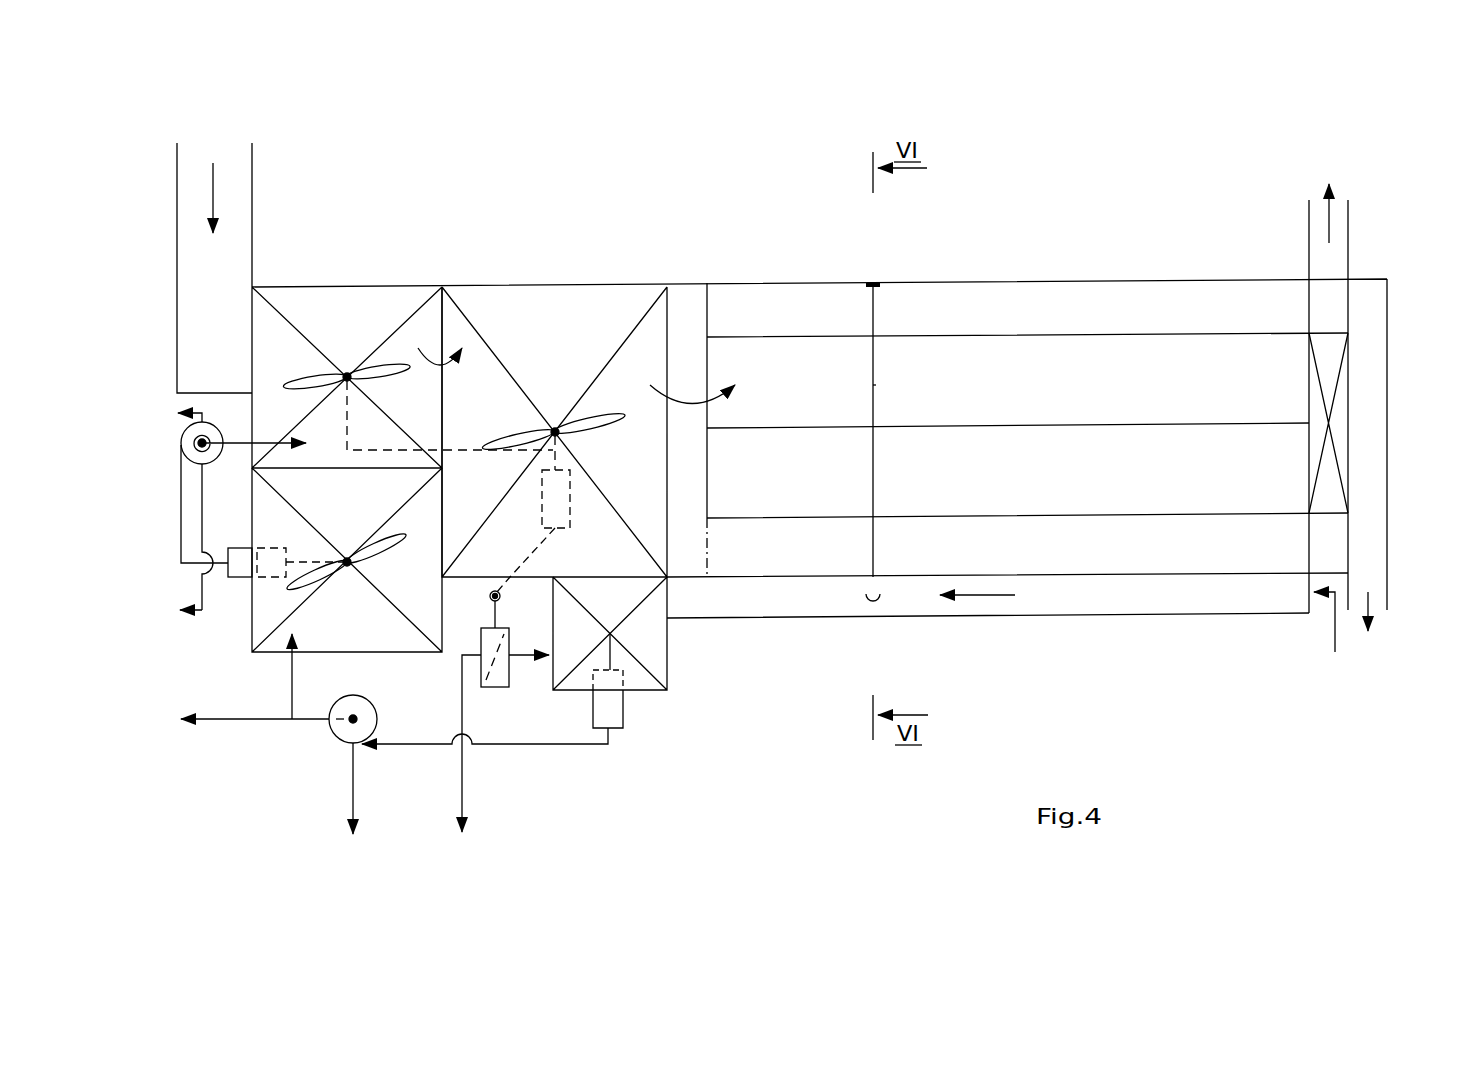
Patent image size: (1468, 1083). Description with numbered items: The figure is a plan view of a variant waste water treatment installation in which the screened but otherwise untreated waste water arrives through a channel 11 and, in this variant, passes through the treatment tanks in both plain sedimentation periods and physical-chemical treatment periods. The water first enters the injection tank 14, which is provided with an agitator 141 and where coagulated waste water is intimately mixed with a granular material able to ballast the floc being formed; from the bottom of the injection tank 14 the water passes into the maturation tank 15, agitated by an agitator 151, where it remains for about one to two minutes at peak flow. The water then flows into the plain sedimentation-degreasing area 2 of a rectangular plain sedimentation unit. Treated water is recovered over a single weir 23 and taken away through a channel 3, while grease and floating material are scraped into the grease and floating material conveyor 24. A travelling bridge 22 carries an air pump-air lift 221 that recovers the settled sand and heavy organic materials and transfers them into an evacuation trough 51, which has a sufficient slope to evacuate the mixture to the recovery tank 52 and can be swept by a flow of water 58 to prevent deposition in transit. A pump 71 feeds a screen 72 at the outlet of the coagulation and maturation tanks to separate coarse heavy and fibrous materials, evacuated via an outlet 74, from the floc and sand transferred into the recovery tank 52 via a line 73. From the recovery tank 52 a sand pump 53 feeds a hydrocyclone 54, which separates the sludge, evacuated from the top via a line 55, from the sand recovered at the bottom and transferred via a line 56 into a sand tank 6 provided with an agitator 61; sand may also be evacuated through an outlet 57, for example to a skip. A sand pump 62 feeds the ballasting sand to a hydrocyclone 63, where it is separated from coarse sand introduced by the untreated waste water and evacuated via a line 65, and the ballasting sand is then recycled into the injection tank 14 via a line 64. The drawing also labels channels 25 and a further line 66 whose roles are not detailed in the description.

The plain sedimentation-degreasing area 2 is at (1098, 393).
The channel 3 is at (1308, 220).
The sand tank 6 is at (353, 638).
The channel 11 is at (225, 325).
The injection tank 14 is at (356, 325).
The maturation tank 15 is at (561, 323).
The travelling bridge 22 is at (873, 305).
The weir 23 is at (1330, 358).
The grease and floating material conveyor 24 is at (1380, 592).
The side channels 25 is at (1105, 318).
The evacuation trough 51 is at (910, 600).
The recovery tank 52 is at (620, 611).
The sand pump 53 is at (613, 705).
The hydrocyclone 54 is at (400, 745).
The line 55 is at (352, 785).
The line 56 is at (293, 678).
The outlet 57 is at (245, 722).
The flow of water 58 is at (1333, 630).
The agitator 61 is at (382, 545).
The sand pump 62 is at (270, 560).
The hydrocyclone 63 is at (213, 460).
The line 64 is at (260, 442).
The line 65 is at (205, 597).
The outlet line 66 is at (195, 418).
The pump 71 is at (558, 500).
The screen 72 is at (500, 680).
The line 73 is at (538, 655).
The outlet 74 is at (462, 798).
The agitator 141 is at (390, 367).
The agitator 151 is at (607, 422).
The air pump-air lift 221 is at (873, 470).